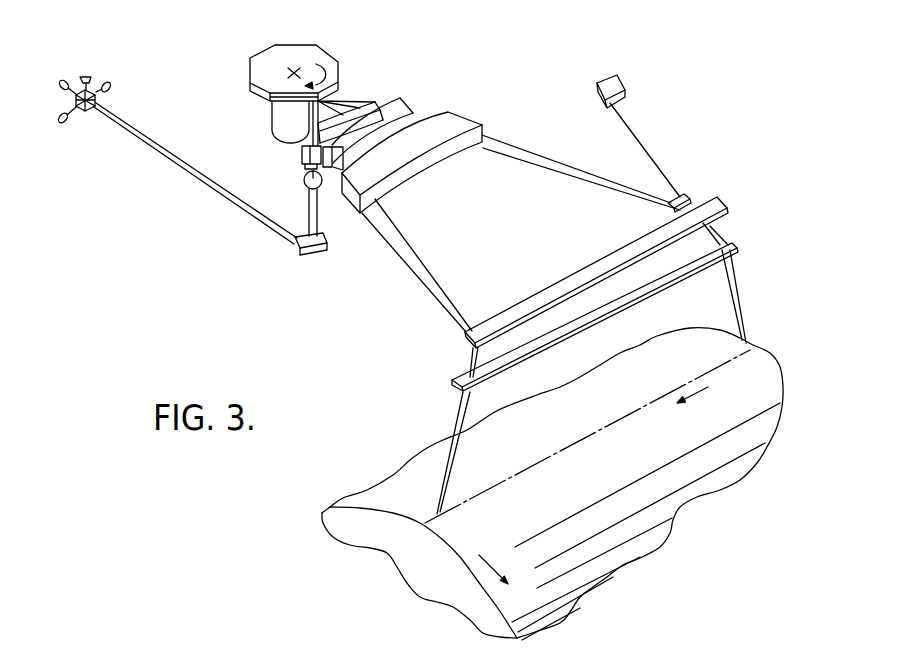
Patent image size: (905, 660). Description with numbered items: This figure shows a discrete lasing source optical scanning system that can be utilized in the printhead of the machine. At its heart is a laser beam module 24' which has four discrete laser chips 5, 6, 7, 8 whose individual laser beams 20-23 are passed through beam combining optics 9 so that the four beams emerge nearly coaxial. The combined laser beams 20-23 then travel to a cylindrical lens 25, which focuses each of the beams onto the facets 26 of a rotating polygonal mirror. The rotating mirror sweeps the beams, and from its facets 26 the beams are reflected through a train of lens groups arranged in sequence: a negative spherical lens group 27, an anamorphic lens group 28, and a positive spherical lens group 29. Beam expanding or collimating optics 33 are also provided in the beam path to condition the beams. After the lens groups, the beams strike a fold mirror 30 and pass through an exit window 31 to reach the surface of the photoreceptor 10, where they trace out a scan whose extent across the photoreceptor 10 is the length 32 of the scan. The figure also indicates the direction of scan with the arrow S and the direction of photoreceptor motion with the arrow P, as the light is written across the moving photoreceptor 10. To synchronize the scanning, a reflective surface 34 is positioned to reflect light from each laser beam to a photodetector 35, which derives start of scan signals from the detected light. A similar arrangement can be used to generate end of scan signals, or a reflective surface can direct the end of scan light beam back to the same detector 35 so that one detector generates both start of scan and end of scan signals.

The discrete laser chip 5 is at (57, 122).
The discrete laser chip 6 is at (59, 82).
The discrete laser chip 7 is at (86, 75).
The discrete laser chip 8 is at (113, 88).
The beam combining optics 9 is at (86, 112).
The laser beam module 24' is at (102, 91).
The laser beams 20-23 is at (188, 164).
The cylindrical lens 25 is at (303, 150).
The facets of rotating polygonal mirror 26 is at (345, 82).
The negative spherical lens group 27 is at (372, 99).
The anamorphic lens group 28 is at (413, 100).
The positive spherical lens group 29 is at (470, 126).
The fold mirror 30 is at (714, 198).
The exit window 31 is at (735, 244).
The length of scan 32 is at (563, 449).
The beam expanding or collimating optics 33 is at (304, 180).
The reflective surface 34 is at (682, 198).
The photodetector 35 is at (616, 84).
The photoreceptor 10 is at (570, 597).
The scan direction S is at (692, 410).
The web travel direction P is at (505, 580).